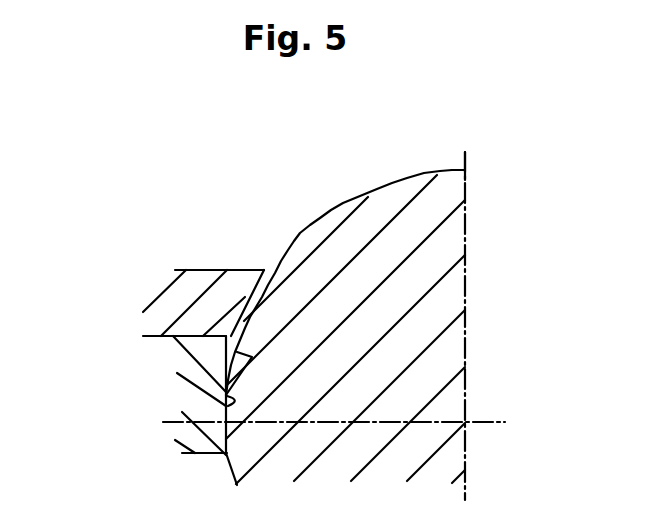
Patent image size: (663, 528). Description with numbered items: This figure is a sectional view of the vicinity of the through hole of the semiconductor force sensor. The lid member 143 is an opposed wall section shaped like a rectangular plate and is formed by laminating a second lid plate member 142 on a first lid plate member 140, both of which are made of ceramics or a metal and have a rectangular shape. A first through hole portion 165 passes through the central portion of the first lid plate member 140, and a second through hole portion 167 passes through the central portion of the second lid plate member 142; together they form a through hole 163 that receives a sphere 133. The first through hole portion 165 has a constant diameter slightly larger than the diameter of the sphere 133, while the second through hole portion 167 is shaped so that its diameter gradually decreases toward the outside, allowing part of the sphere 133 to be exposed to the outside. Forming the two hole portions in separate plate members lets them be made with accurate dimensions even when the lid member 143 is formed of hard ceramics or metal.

The sphere 133 is at (447, 297).
The first lid plate member 140 is at (201, 453).
The second lid plate member 142 is at (208, 288).
The lid member 143 is at (134, 312).
The through hole 163 is at (212, 382).
The first through hole portion 165 is at (207, 405).
The second through hole portion 167 is at (245, 315).